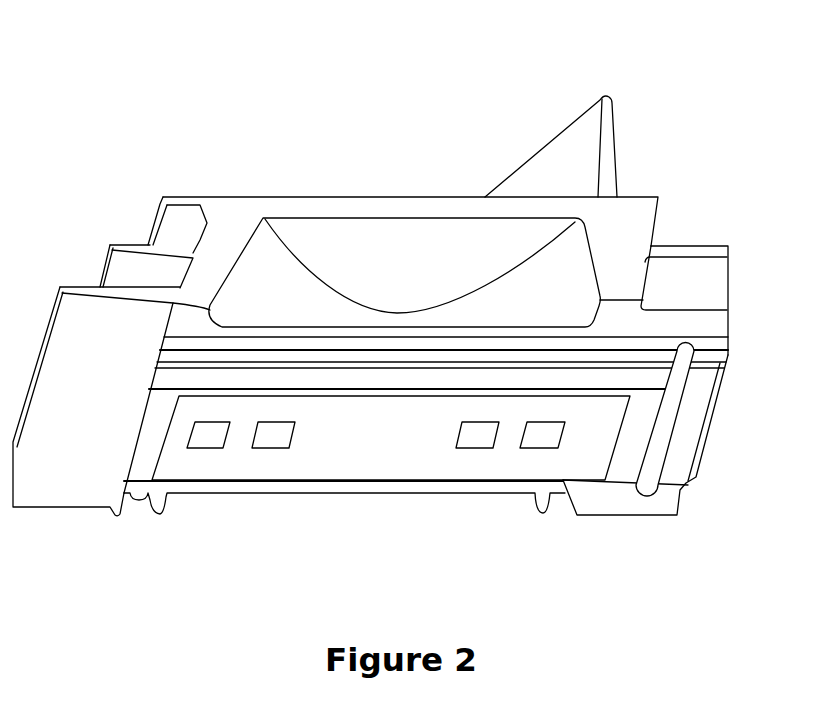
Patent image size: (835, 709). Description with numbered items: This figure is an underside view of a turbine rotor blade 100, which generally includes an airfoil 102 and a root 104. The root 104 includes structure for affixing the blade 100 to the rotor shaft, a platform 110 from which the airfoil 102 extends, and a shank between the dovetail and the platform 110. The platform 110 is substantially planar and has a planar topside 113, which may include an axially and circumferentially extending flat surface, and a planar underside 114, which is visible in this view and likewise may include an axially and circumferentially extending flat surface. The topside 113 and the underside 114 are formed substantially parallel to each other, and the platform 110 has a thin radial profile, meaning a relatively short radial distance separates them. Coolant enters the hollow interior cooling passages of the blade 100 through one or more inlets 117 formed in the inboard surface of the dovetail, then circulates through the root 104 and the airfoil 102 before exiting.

The turbine rotor blade 100 is at (141, 75).
The platform 110 is at (176, 179).
The topside 113 is at (308, 197).
The airfoil 102 is at (570, 148).
The underside 114 is at (433, 286).
The root 104 is at (752, 393).
The inlets 117 is at (208, 438).